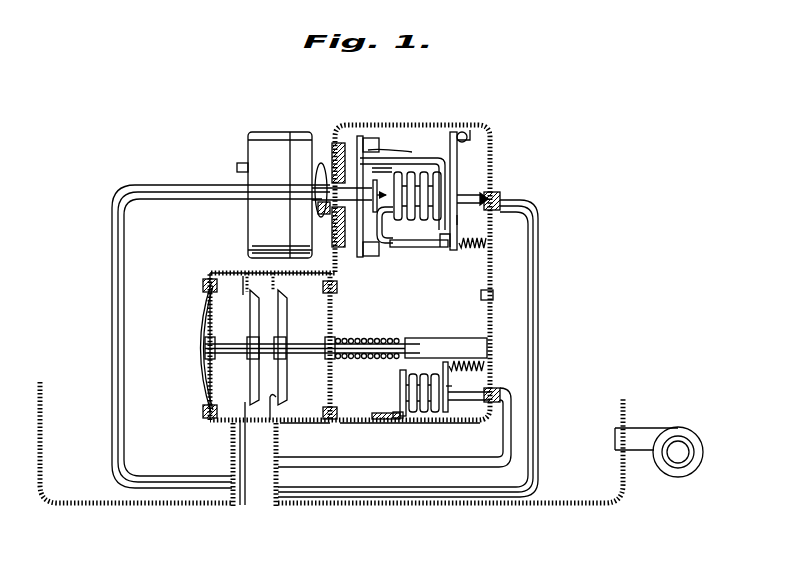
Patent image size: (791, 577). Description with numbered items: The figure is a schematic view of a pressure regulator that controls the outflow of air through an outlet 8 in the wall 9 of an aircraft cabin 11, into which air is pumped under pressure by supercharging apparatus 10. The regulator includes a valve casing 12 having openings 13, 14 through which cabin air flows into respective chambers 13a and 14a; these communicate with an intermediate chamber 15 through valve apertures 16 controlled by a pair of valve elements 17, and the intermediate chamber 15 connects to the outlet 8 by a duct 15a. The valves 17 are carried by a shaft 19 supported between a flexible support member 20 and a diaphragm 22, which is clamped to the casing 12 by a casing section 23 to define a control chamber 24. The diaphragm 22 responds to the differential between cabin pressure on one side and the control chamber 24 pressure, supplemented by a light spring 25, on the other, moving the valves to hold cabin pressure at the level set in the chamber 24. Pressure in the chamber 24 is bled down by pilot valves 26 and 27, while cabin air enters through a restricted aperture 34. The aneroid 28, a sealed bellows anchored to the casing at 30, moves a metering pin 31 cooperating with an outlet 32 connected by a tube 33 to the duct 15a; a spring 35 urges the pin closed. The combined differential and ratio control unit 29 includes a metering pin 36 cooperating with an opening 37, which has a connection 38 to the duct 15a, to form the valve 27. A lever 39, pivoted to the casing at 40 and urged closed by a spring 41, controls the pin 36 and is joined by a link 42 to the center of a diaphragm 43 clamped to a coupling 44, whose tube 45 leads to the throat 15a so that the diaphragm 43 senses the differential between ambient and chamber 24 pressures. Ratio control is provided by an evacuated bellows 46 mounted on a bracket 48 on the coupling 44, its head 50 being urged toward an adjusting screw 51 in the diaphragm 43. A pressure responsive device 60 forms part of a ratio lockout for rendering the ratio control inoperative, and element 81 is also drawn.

The outlet 8 is at (266, 508).
The wall 9 is at (73, 506).
The supercharging apparatus 10 is at (686, 433).
The cabin 11 is at (72, 401).
The valve casing 12 is at (258, 270).
The opening 13 is at (297, 276).
The chamber 13a is at (301, 411).
The opening 14 is at (222, 270).
The chamber 14a is at (228, 395).
The intermediate chamber 15 is at (262, 282).
The duct 15a is at (238, 449).
The valve apertures 16 is at (245, 296).
The valve elements 17 is at (249, 375).
The shaft 19 is at (298, 345).
The flexible support member 20 is at (210, 377).
The diaphragm 22 is at (338, 303).
The casing section 23 is at (357, 424).
The control chamber 24 is at (418, 294).
The spring 25 is at (403, 342).
The pilot valve 26 is at (466, 386).
The pilot valve 27 is at (466, 222).
The aneroid 28 is at (408, 376).
The combined differential and ratio control unit 29 is at (413, 152).
The anchor 30 is at (395, 414).
The metering pin 31 is at (462, 396).
The outlet 32 is at (500, 393).
The tube 33 is at (503, 443).
The restricted aperture 34 is at (490, 298).
The spring 35 is at (470, 364).
The metering pin 36 is at (474, 200).
The opening 37 is at (500, 206).
The connection 38 is at (539, 333).
The lever 39 is at (459, 153).
The pivot 40 is at (466, 133).
The spring 41 is at (474, 246).
The link 42 is at (426, 248).
The diaphragm 43 is at (358, 160).
The coupling 44 is at (318, 210).
The tube 45 is at (112, 280).
The evacuated bellows 46 is at (432, 184).
The bracket 48 is at (396, 156).
The head 50 is at (395, 245).
The adjusting screw 51 is at (376, 186).
The pressure responsive device 60 is at (282, 130).
The link 81 is at (408, 180).